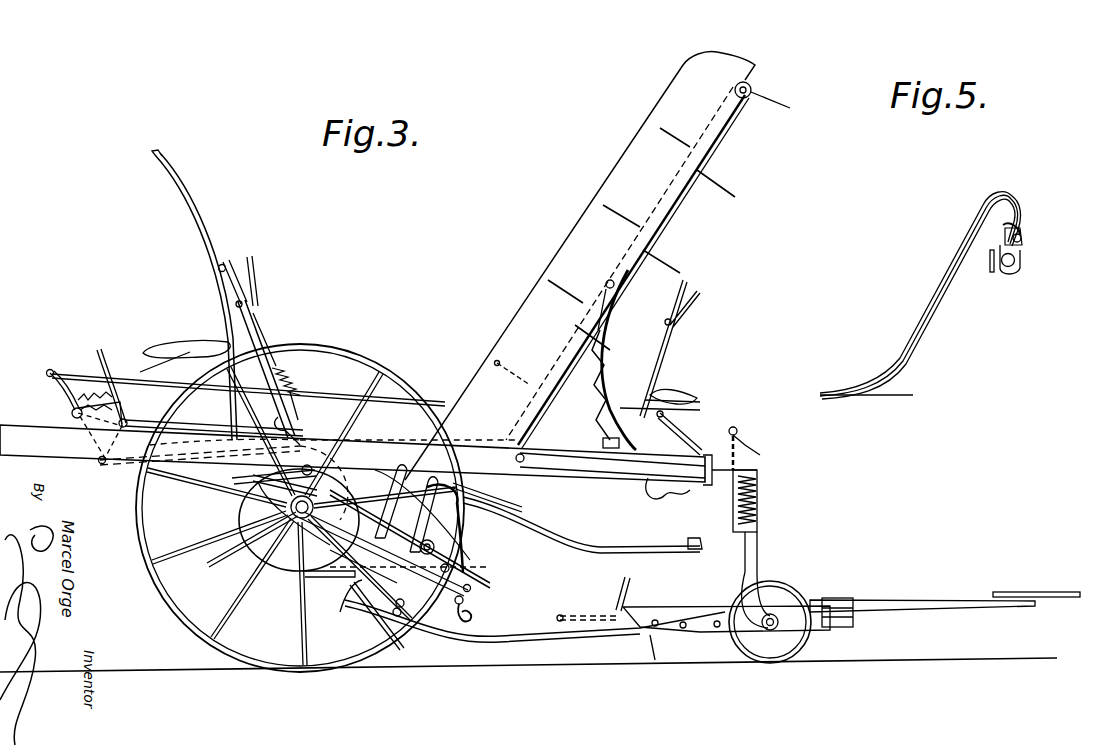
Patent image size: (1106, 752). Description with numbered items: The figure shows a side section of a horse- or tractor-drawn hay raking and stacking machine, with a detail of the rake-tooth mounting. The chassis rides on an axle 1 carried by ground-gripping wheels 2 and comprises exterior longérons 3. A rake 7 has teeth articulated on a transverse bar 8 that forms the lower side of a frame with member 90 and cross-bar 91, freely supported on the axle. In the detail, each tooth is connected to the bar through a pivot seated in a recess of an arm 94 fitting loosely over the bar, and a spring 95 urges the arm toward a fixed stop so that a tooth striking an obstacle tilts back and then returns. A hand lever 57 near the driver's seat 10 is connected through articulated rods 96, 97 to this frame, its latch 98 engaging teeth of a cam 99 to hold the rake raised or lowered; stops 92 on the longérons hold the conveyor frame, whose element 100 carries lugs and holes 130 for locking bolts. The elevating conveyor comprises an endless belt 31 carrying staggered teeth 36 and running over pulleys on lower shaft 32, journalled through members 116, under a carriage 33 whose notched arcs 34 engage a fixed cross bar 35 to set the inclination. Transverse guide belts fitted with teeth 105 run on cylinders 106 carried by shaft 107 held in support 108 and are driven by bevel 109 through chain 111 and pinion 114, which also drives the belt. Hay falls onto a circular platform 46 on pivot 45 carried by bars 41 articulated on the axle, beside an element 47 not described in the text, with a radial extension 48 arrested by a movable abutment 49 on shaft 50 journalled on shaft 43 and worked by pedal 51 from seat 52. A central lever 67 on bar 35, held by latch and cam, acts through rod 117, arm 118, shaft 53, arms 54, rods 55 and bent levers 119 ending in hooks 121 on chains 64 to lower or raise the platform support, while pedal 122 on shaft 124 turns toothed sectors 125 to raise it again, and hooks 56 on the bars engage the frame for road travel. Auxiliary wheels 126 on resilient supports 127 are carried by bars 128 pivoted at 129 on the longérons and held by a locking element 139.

In FIG. 3, the axle 1 is at (301, 516).
In FIG. 3, the wheels 2 is at (130, 520).
In FIG. 3, the longérons 3 is at (48, 460).
In FIG. 3, the rake 7 is at (345, 640).
In FIG. 5, the rake 7 is at (950, 262).
In FIG. 3, the transverse bar 8 is at (405, 616).
In FIG. 5, the transverse bar 8 is at (1010, 268).
In FIG. 3, the driver's seat 10 is at (190, 345).
In FIG. 3, the endless belt 31 is at (612, 258).
In FIG. 3, the lower shaft 32 is at (470, 540).
In FIG. 3, the carriage 33 is at (520, 315).
In FIG. 3, the notched arcs 34 is at (604, 360).
In FIG. 3, the fixed cross bar 35 is at (616, 455).
In FIG. 3, the teeth 36 is at (495, 362).
In FIG. 3, the longitudinal bars 41 is at (665, 628).
In FIG. 3, the transverse shaft 43 is at (652, 660).
In FIG. 3, the supporting pivot 45 is at (842, 598).
In FIG. 3, the platform 46 is at (940, 598).
In FIG. 3, the inner shoe 47 is at (630, 618).
In FIG. 3, the radial extension 48 is at (1043, 590).
In FIG. 3, the movable abutment 49 is at (565, 612).
In FIG. 3, the transverse shaft 50 is at (568, 624).
In FIG. 3, the pedal 51 is at (639, 587).
In FIG. 3, the seat 52 is at (700, 395).
In FIG. 3, the transverse shaft 53 is at (85, 455).
In FIG. 3, the arms 54 is at (50, 380).
In FIG. 3, the rods 55 is at (112, 383).
In FIG. 3, the hooks 56 is at (470, 600).
In FIG. 3, the hand lever 57 is at (240, 290).
In FIG. 3, the chains 64 is at (758, 548).
In FIG. 3, the central lever 67 is at (660, 360).
In FIG. 3, the frame member 90 is at (277, 543).
In FIG. 3, the cross-bar 91 is at (296, 511).
In FIG. 3, the stops 92 is at (240, 476).
In FIG. 5, the arm 94 is at (1003, 232).
In FIG. 5, the spring 95 is at (1022, 265).
In FIG. 3, the articulated rod 96 is at (282, 445).
In FIG. 3, the articulated rod 97 is at (265, 490).
In FIG. 3, the latch 98 is at (300, 395).
In FIG. 3, the cam 99 is at (284, 425).
In FIG. 3, the frame element 100 is at (455, 576).
In FIG. 3, the teeth 105 is at (510, 500).
In FIG. 3, the cylinders 106 is at (330, 617).
In FIG. 3, the shaft 107 is at (296, 571).
In FIG. 3, the support 108 is at (330, 544).
In FIG. 3, the bevel 109 is at (450, 517).
In FIG. 3, the chain 111 is at (330, 584).
In FIG. 3, the pinion 114 is at (581, 528).
In FIG. 3, the members 116 is at (445, 550).
In FIG. 3, the rod 117 is at (427, 398).
In FIG. 3, the arm 118 is at (102, 465).
In FIG. 3, the bent levers 119 is at (694, 431).
In FIG. 3, the hooks 121 is at (740, 432).
In FIG. 3, the pedal 122 is at (698, 551).
In FIG. 3, the transverse shaft 124 is at (128, 422).
In FIG. 3, the toothed sector 125 is at (112, 392).
In FIG. 3, the auxiliary wheels 126 is at (805, 635).
In FIG. 3, the resilient supports 127 is at (757, 490).
In FIG. 3, the bars 128 is at (683, 494).
In FIG. 3, the pivots 129 is at (525, 452).
In FIG. 3, the holes 130 is at (327, 477).
In FIG. 3, the locking element 139 is at (735, 428).